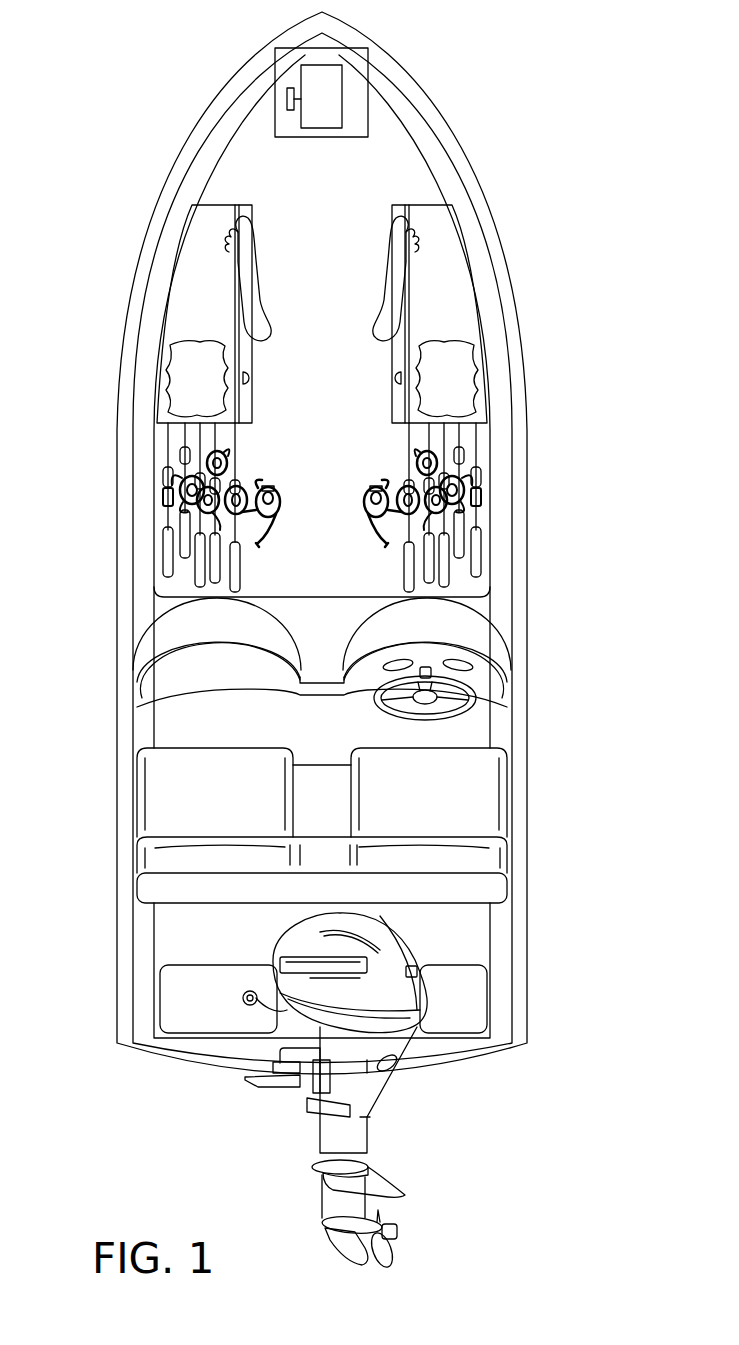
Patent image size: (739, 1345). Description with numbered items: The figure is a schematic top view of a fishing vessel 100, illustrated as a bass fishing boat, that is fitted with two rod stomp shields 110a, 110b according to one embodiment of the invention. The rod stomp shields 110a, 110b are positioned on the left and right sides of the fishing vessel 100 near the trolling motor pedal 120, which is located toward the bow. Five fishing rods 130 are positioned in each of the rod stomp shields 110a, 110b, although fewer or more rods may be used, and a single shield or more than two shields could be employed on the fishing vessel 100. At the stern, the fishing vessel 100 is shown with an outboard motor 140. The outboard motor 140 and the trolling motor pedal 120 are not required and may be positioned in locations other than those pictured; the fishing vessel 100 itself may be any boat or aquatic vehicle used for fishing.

The fishing vessel 100 is at (216, 88).
The rod stomp shield 110a is at (177, 283).
The rod stomp shield 110b is at (458, 272).
The trolling motor pedal 120 is at (328, 95).
The fishing rods 130 is at (187, 530).
The outboard motor 140 is at (400, 948).